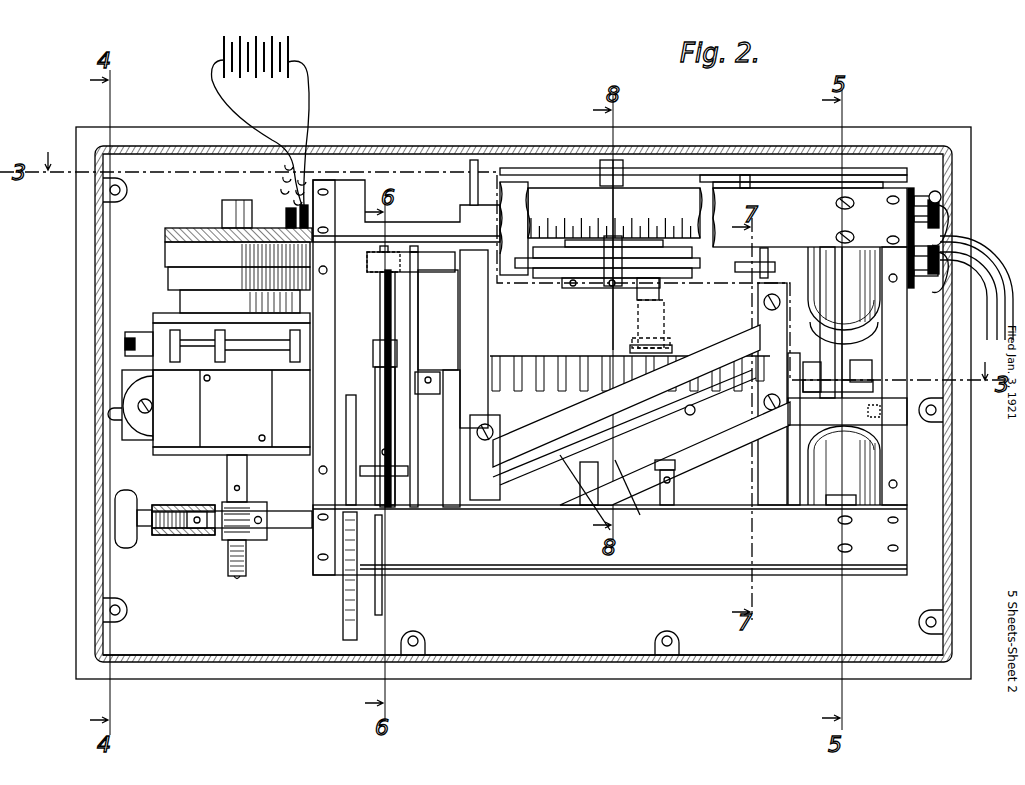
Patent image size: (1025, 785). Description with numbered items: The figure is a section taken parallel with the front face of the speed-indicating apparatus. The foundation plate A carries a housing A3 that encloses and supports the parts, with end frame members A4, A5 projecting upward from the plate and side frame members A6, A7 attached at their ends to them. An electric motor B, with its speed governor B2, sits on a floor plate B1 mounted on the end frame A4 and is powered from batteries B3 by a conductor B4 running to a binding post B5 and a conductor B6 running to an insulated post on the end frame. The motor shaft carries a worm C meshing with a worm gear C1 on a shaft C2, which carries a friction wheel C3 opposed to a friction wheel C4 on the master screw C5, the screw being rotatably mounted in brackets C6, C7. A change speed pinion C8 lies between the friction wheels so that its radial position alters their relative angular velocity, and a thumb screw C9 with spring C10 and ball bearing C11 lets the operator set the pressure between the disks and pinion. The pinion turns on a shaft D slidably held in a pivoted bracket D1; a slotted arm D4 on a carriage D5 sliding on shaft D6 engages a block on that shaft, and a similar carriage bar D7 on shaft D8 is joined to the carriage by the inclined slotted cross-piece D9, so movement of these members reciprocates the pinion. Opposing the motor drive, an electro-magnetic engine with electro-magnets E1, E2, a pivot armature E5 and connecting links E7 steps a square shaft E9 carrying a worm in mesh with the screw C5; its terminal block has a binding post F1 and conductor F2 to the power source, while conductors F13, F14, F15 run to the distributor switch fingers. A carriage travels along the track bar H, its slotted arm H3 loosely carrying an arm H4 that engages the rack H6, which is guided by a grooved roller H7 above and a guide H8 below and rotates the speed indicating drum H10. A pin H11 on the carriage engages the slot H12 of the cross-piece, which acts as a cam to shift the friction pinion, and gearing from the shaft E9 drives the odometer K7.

The foundation plate A is at (250, 672).
The housing A3 is at (577, 655).
The end frame member A4 is at (318, 385).
The end frame member A5 is at (900, 440).
The side frame member A6 is at (548, 540).
The side frame member A7 is at (788, 195).
The electric motor B is at (175, 384).
The floor plate B1 is at (120, 430).
The speed governor B2 is at (180, 252).
The batteries B3 is at (253, 40).
The conductor B4 is at (217, 82).
The binding post B5 is at (290, 214).
The conductor B6 is at (312, 80).
The worm C is at (235, 540).
The worm gear C1 is at (233, 576).
The shaft C2 is at (200, 525).
The friction wheel C3 is at (343, 592).
The friction wheel C4 is at (418, 305).
The master screw C5 is at (540, 356).
The bracket C6 is at (452, 486).
The bracket C7 is at (773, 445).
The change speed pinion C8 is at (358, 468).
The thumb screw C9 is at (115, 512).
The spring C10 is at (170, 520).
The ball bearing C11 is at (200, 514).
The shaft D is at (380, 305).
The bracket D1 is at (396, 348).
The arm D4 is at (405, 258).
The carriage D5 is at (490, 308).
The shaft D6 is at (470, 185).
The carriage bar D7 is at (770, 308).
The shaft D8 is at (762, 272).
The inclined slotted cross-piece D9 is at (630, 530).
The electro-magnet E1 is at (825, 464).
The electro-magnet E2 is at (850, 297).
The pivot armature E5 is at (845, 348).
The connecting link E7 is at (850, 363).
The square shaft E9 is at (825, 300).
The binding post F1 is at (912, 195).
The conductor F2 is at (982, 235).
The conductor F13 is at (980, 248).
The conductor F14 is at (975, 262).
The conductor F15 is at (968, 275).
The track bar H is at (748, 453).
The slotted arm H3 is at (660, 338).
The arm H4 is at (652, 283).
The rack H6 is at (700, 272).
The grooved roller H7 is at (607, 290).
The guide H8 is at (590, 288).
The speed indicating drum H10 is at (655, 205).
The pin H11 is at (690, 407).
The slot H12 is at (585, 447).
The odometer K7 is at (680, 497).